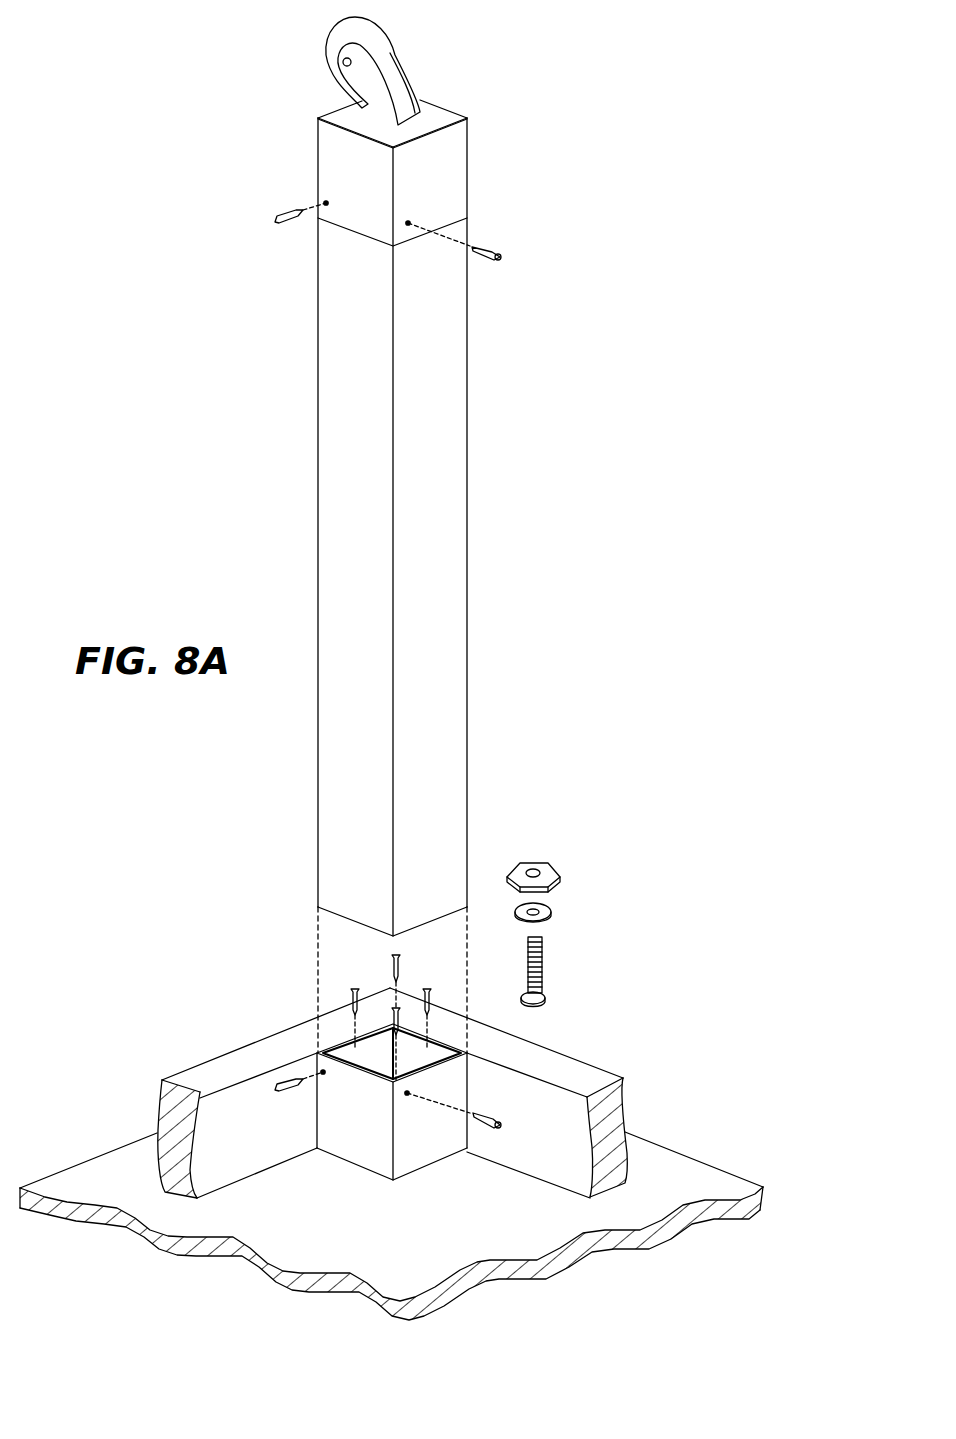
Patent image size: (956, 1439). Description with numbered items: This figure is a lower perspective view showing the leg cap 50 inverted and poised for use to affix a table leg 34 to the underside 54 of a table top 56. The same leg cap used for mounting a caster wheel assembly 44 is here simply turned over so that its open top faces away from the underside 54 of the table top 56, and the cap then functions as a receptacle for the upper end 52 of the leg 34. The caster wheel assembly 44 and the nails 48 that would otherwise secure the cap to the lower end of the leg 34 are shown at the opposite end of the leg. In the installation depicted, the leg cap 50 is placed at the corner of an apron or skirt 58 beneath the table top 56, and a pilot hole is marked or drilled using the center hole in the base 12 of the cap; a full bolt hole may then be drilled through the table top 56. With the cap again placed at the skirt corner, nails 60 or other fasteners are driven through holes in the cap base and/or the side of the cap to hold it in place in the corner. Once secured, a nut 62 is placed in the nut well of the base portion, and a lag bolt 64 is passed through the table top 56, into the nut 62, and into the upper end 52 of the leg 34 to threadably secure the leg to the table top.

The base 12 is at (345, 115).
The leg 34 is at (465, 483).
The caster wheel assembly 44 is at (405, 65).
The nails 48 is at (292, 210).
The leg cap 50 is at (332, 1127).
The upper end 52 is at (467, 890).
The underside 54 is at (418, 1242).
The table top 56 is at (680, 1168).
The apron or skirt 58 is at (295, 1038).
The nails 60 is at (394, 967).
The nut 62 is at (548, 873).
The lag bolt 64 is at (545, 1002).